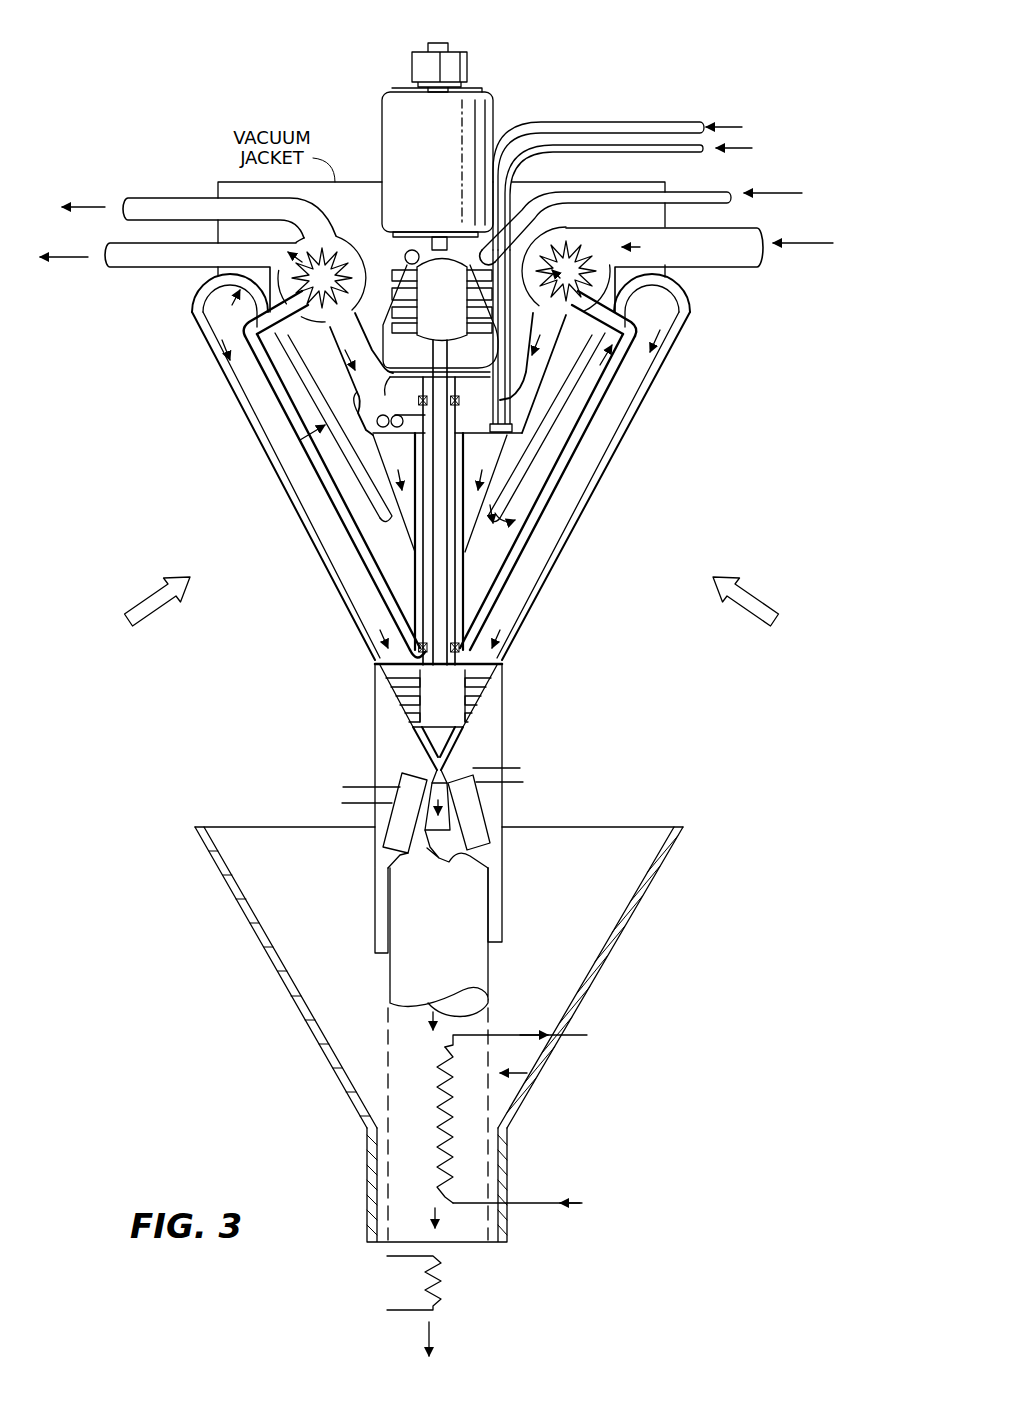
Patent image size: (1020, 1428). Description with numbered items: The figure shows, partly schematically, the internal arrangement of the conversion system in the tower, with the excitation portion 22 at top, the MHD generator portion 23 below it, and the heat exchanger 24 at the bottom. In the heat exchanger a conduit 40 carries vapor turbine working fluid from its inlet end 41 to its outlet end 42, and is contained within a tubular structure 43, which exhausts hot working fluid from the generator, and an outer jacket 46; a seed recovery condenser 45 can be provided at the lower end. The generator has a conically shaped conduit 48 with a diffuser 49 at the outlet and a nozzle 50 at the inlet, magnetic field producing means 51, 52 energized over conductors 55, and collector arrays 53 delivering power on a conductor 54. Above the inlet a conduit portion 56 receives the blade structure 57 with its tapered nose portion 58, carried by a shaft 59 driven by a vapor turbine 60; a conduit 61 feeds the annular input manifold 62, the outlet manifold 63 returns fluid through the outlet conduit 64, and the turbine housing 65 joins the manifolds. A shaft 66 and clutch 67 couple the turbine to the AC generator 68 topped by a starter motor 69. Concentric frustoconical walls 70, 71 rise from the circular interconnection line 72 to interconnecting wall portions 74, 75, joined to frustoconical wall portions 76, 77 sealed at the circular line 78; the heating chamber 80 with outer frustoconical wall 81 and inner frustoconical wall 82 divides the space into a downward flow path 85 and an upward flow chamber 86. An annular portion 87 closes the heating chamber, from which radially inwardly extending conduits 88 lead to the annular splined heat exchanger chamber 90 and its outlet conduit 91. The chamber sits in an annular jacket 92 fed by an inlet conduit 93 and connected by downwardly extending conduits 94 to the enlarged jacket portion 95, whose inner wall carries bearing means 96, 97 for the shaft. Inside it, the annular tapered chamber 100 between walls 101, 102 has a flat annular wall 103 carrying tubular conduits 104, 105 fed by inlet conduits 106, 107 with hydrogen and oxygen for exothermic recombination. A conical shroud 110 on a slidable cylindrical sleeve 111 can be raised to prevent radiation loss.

The excitation portion 22 is at (636, 452).
The MHD generator portion 23 is at (525, 797).
The heat exchanger 24 is at (530, 1078).
The conduit 40 is at (440, 1118).
The inlet end 41 is at (493, 1035).
The outlet end 42 is at (540, 1203).
The tubular structure 43 is at (490, 962).
The seed recovery condenser 45 is at (441, 1283).
The outer jacket 46 is at (503, 900).
The conically shaped conduit 48 is at (478, 857).
The diffuser 49 is at (393, 858).
The nozzle 50 is at (412, 768).
The magnetic field producing means 51 is at (386, 835).
The magnetic field producing means 52 is at (492, 812).
The collector arrays 53 is at (432, 835).
The conductor 54 is at (520, 768).
The conductors 55 is at (342, 803).
The conduit portion 56 is at (416, 730).
The blade structure 57 is at (395, 690).
The tapered nose portion 58 is at (462, 740).
The shaft 59 is at (449, 612).
The vapor turbine 60 is at (412, 272).
The conduit 61 is at (695, 192).
The annular input manifold 62 is at (409, 251).
The outlet manifold 63 is at (385, 357).
The outlet conduit 64 is at (195, 197).
The turbine housing 65 is at (405, 298).
The shaft 66 is at (480, 250).
The clutch 67 is at (432, 243).
The AC generator 68 is at (492, 105).
The starter motor 69 is at (468, 62).
The frustoconical wall 70 is at (532, 612).
The frustoconical wall 71 is at (538, 585).
The circular interconnection line 72 is at (375, 660).
The interconnecting wall portion 74 is at (680, 310).
The interconnecting wall portion 75 is at (685, 295).
The frustoconical wall portion 76 is at (292, 362).
The frustoconical wall portion 77 is at (297, 387).
The circular line 78 is at (390, 525).
The heating chamber 80 is at (290, 440).
The outer frustoconical wall 81 is at (530, 555).
The inner frustoconical wall 82 is at (540, 524).
The flow path 85 is at (350, 600).
The flow chamber 86 is at (605, 400).
The annular portion 87 is at (238, 330).
The radially inwardly extending conduits 88 is at (225, 305).
The annular splined heat exchanger chamber 90 is at (304, 290).
The outlet conduit 91 is at (150, 268).
The annular jacket 92 is at (283, 245).
The inlet conduit 93 is at (725, 227).
The downwardly extending conduits 94 is at (340, 360).
The enlarged jacket portion 95 is at (350, 395).
The bearing means 96 is at (470, 650).
The bearing means 97 is at (398, 378).
The annular tapered chamber 100 is at (385, 457).
The wall 101 is at (362, 490).
The wall 102 is at (375, 512).
The flat annular wall 103 is at (498, 440).
The tubular conduit 104 is at (388, 416).
The tubular conduit 105 is at (512, 428).
The inlet conduit 106 is at (580, 150).
The inlet conduit 107 is at (596, 120).
The conical shroud 110 is at (325, 1060).
The cylindrical sleeve 111 is at (367, 1175).